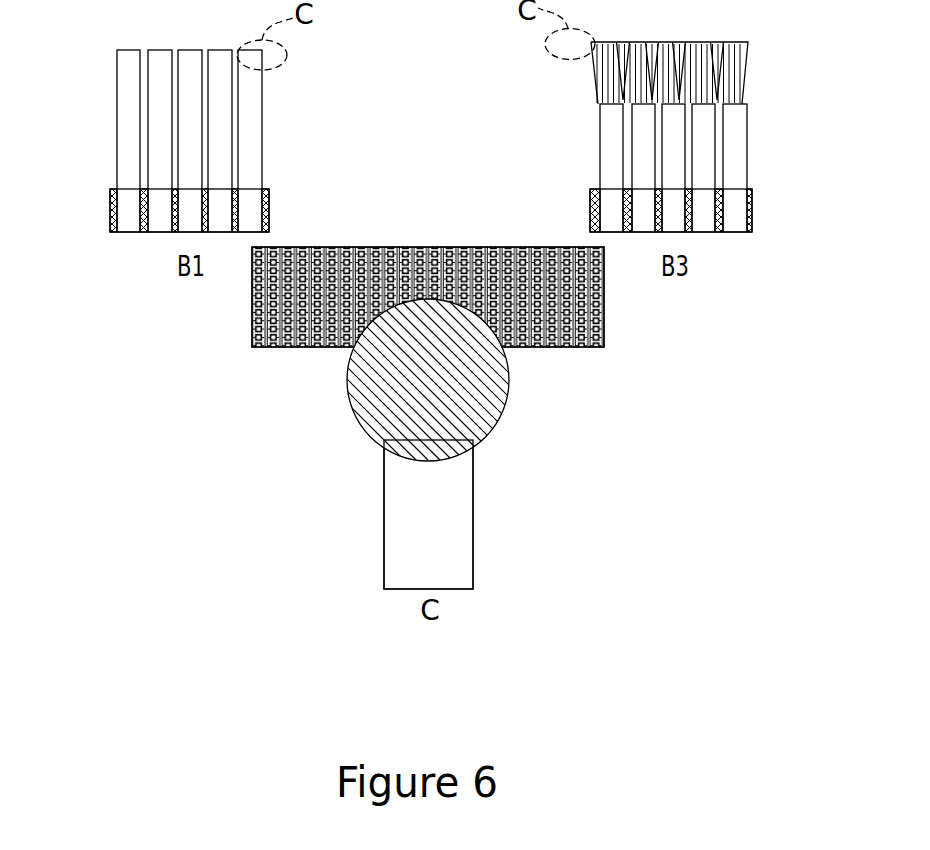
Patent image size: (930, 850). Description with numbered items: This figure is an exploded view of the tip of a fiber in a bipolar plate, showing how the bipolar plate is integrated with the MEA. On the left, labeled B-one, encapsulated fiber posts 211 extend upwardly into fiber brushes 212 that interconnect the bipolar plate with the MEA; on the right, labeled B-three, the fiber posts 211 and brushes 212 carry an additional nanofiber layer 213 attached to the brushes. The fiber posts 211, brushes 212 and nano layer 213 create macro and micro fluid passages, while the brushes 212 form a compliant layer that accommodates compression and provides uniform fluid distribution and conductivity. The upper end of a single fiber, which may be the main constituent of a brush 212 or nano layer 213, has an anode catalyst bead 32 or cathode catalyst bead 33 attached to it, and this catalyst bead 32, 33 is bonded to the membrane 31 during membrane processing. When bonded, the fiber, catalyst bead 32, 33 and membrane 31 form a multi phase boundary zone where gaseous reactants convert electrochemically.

The fiber posts 211 is at (103, 188).
The fiber brushes 212 is at (103, 48).
The nanofiber layer 213 is at (775, 42).
The membrane 31 is at (445, 284).
The anode catalyst bead 32 is at (414, 380).
The cathode catalyst bead 33 is at (466, 395).